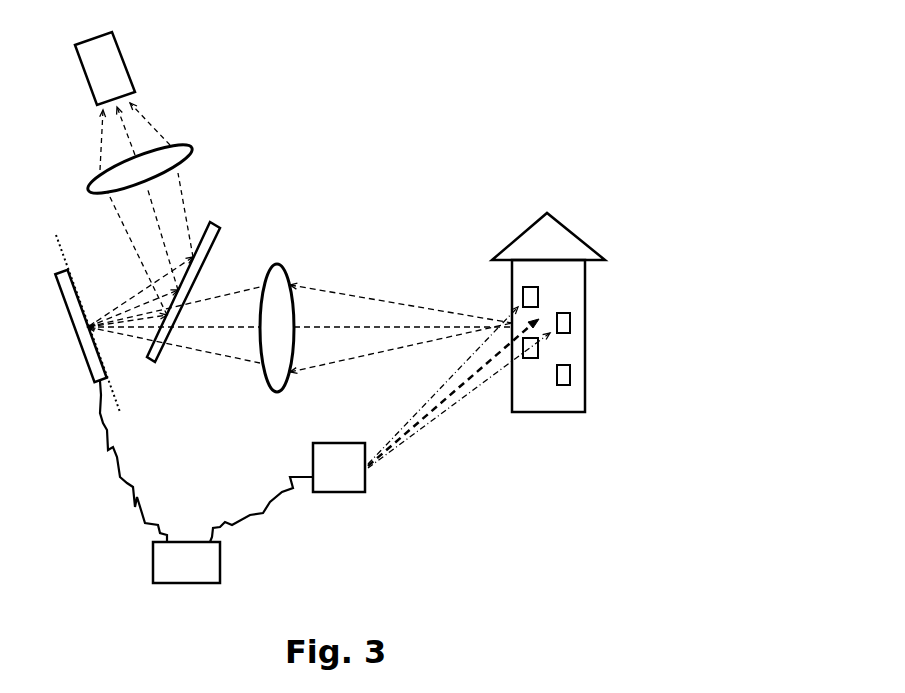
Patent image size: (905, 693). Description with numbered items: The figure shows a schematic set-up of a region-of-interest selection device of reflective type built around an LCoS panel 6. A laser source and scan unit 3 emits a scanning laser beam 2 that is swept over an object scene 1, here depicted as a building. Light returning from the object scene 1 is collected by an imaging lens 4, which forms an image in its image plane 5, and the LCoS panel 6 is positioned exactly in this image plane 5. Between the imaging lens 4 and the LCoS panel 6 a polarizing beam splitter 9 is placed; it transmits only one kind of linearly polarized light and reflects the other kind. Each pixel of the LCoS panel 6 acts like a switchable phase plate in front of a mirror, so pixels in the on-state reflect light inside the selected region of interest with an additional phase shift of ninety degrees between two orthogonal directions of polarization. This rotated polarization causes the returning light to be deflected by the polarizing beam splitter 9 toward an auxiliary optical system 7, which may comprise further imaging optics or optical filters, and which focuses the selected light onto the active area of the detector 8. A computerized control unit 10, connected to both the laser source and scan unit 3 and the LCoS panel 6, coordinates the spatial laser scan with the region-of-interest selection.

The object scene 1 is at (545, 385).
The scanning laser beam 2 is at (470, 385).
The laser source and scan unit 3 is at (343, 497).
The imaging lens 4 is at (285, 275).
The image plane of imaging lens 5 is at (57, 222).
The LCoS panel 6 is at (75, 348).
The auxiliary optical system 7 is at (198, 167).
The detector 8 is at (123, 111).
The polarizing beam splitter 9 is at (153, 367).
The computerized control unit 10 is at (207, 562).